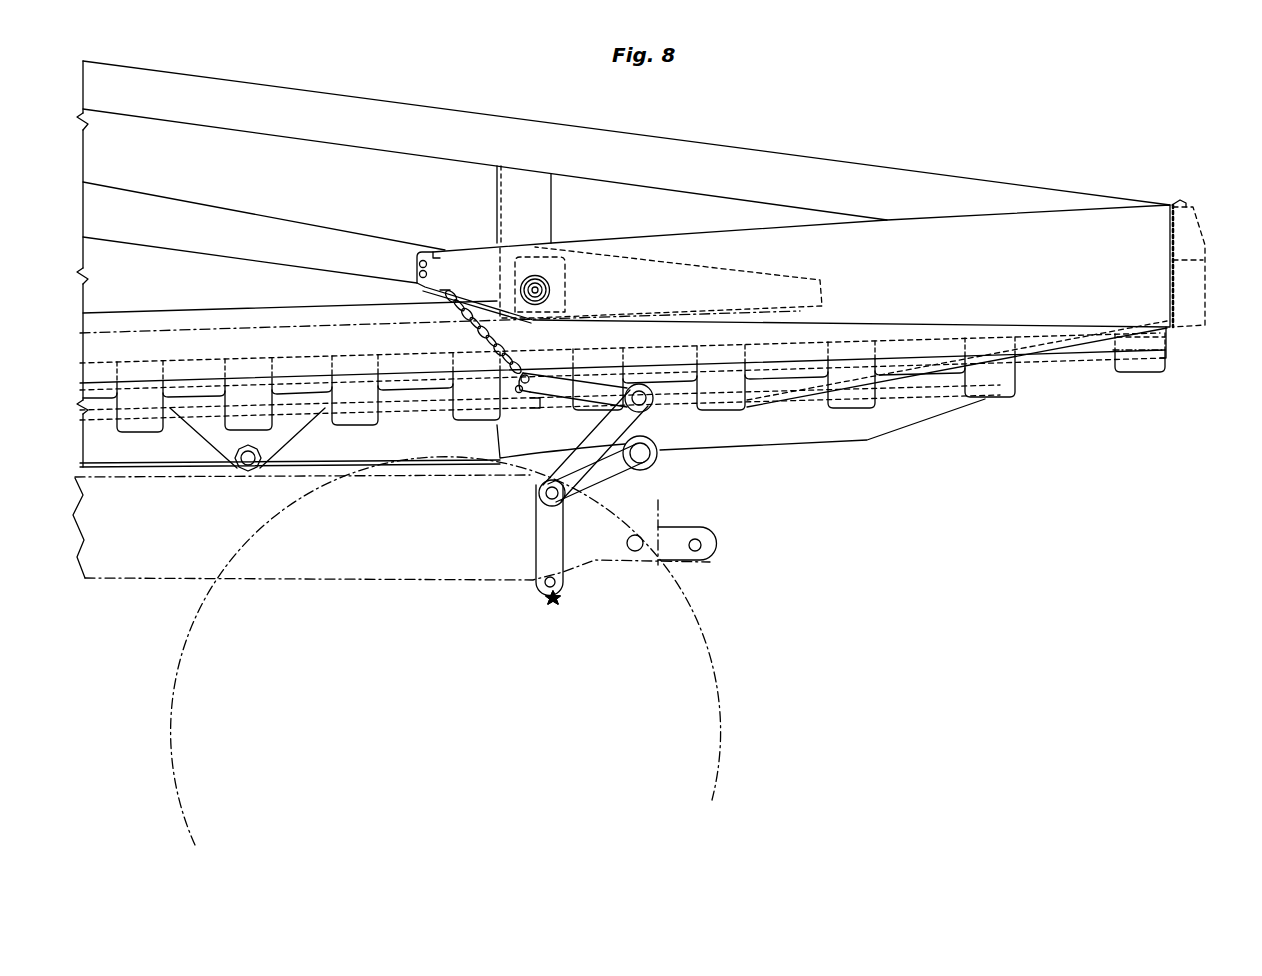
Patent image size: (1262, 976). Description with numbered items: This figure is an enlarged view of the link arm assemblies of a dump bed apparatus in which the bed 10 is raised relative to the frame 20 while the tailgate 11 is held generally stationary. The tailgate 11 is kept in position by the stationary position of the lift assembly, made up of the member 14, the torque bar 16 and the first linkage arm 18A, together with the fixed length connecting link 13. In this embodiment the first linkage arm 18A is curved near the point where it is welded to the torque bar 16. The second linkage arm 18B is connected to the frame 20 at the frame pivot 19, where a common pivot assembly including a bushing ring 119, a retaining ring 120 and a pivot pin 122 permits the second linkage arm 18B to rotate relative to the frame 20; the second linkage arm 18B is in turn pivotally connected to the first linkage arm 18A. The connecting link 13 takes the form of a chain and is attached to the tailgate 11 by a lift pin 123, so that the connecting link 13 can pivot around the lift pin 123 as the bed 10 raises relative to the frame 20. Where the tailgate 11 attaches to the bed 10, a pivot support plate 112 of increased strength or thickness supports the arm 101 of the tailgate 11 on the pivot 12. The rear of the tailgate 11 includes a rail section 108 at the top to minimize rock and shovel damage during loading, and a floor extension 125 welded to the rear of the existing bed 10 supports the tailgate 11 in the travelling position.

The bed 10 is at (826, 165).
The arm 101 is at (597, 240).
The pivot support plate 112 is at (525, 258).
The pivot 12 is at (552, 290).
The lift pin 123 is at (414, 265).
The rail section 108 is at (1172, 203).
The tailgate 11 is at (1197, 215).
The floor extension 125 is at (1172, 333).
The connecting link 13 is at (477, 350).
The lift assembly element 14 is at (543, 405).
The torque bar 16 is at (655, 410).
The first linkage arm 18A is at (620, 477).
The second linkage arm 18B is at (534, 588).
The frame pivot 19 is at (558, 582).
The bushing ring 119 is at (580, 670).
The retaining ring 120 is at (584, 618).
The pivot pin 122 is at (584, 629).
The frame 20 is at (146, 563).